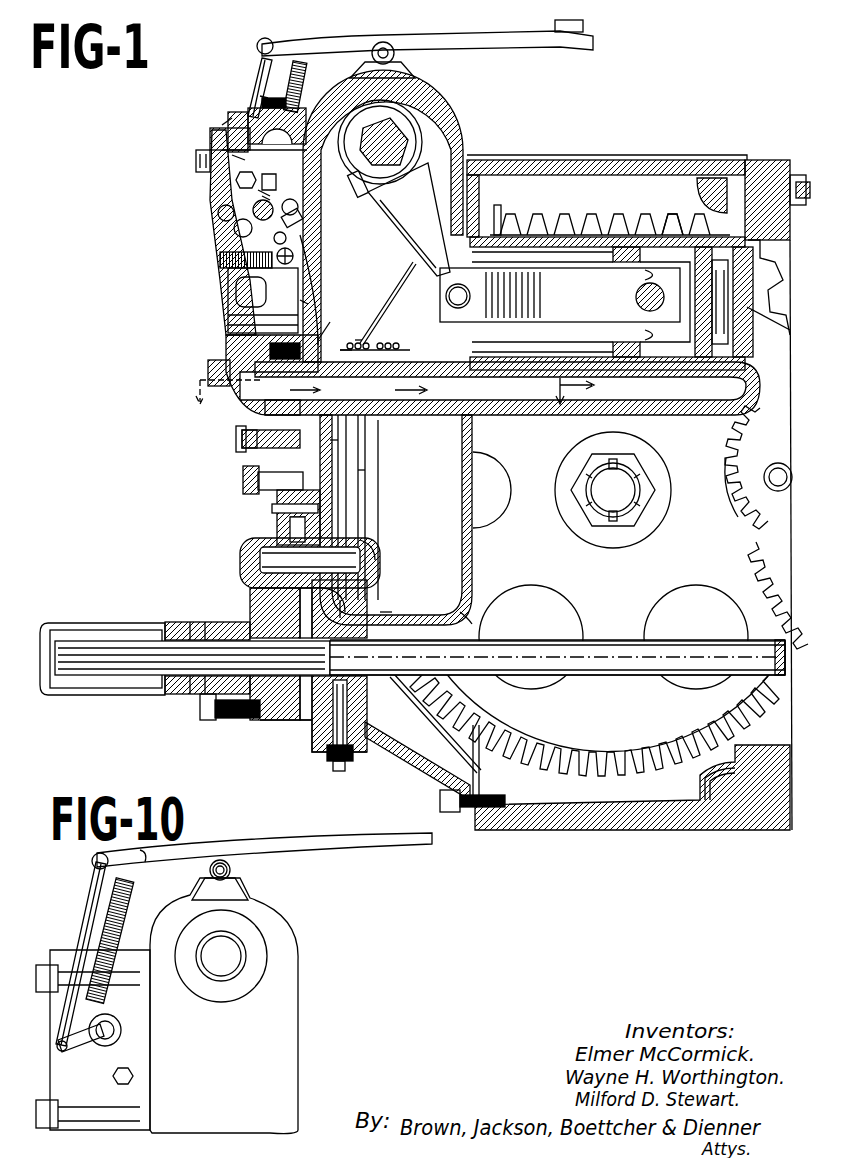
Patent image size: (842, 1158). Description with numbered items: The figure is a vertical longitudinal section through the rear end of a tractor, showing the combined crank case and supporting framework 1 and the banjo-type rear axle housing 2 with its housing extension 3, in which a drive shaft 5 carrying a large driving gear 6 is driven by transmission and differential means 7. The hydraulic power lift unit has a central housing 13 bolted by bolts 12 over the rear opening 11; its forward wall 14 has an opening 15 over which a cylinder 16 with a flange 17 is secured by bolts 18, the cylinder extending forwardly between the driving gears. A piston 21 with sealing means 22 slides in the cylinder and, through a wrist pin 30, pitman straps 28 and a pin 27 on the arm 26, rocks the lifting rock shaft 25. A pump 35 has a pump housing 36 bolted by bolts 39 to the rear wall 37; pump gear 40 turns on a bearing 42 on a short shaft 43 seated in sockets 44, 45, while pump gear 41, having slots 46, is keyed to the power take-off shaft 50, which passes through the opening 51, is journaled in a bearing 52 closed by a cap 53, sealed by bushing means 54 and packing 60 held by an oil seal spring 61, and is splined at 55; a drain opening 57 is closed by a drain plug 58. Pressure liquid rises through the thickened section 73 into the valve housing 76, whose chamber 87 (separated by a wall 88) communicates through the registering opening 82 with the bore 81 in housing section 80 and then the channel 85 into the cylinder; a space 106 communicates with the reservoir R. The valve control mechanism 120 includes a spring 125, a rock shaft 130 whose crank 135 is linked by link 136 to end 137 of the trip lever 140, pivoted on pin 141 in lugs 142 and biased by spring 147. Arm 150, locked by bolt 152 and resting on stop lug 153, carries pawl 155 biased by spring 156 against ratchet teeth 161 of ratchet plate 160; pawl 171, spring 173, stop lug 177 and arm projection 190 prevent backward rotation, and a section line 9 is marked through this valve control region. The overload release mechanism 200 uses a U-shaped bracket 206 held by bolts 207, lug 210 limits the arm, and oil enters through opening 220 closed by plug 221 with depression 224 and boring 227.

In FIG. 1, the combined crank case and supporting framework 1 is at (773, 815).
In FIG. 1, the rear axle housing 2 is at (650, 827).
In FIG. 1, the housing extension 3 is at (377, 413).
In FIG. 1, the drive shaft 5 is at (625, 483).
In FIG. 1, the driving gear 6 is at (610, 760).
In FIG. 1, the transmission mechanism and differential means 7 is at (727, 543).
In FIG. 1, the section line 9 is at (322, 333).
In FIG. 1, the rear opening 11 is at (512, 830).
In FIG. 1, the bolts 12 is at (440, 798).
In FIG. 1, the central housing 13 is at (453, 127).
In FIG. 10, the central housing 13 is at (290, 963).
In FIG. 1, the forward wall 14 is at (464, 580).
In FIG. 1, the opening 15 is at (452, 329).
In FIG. 1, the cylinder 16 is at (563, 226).
In FIG. 1, the flange 17 is at (478, 452).
In FIG. 1, the bolts 18 is at (505, 222).
In FIG. 1, the piston 21 is at (660, 232).
In FIG. 1, the sealing means 22 is at (700, 213).
In FIG. 1, the lifting rock shaft 25 is at (443, 104).
In FIG. 1, the arm 26 is at (420, 240).
In FIG. 1, the pin 27 is at (442, 296).
In FIG. 1, the pitman straps 28 is at (549, 288).
In FIG. 1, the wrist pin 30 is at (636, 297).
In FIG. 1, the pump 35 is at (254, 516).
In FIG. 1, the pump housing 36 is at (290, 530).
In FIG. 1, the rear wall 37 is at (333, 449).
In FIG. 1, the bolts 39 is at (246, 486).
In FIG. 1, the pump gear 40 is at (300, 509).
In FIG. 1, the pump gear 41 is at (330, 612).
In FIG. 1, the bearing 42 is at (300, 528).
In FIG. 1, the pin or short shaft 43 is at (362, 545).
In FIG. 1, the socket 44 is at (245, 570).
In FIG. 1, the socket 45 is at (362, 562).
In FIG. 1, the slots 46 is at (368, 650).
In FIG. 1, the power take-off shaft 50 is at (608, 640).
In FIG. 1, the opening 51 is at (308, 742).
In FIG. 1, the bearing 52 is at (250, 618).
In FIG. 1, the cap 53 is at (214, 722).
In FIG. 1, the bushing means 54 is at (166, 636).
In FIG. 1, the splined end 55 is at (86, 640).
In FIG. 1, the drain opening 57 is at (350, 727).
In FIG. 1, the drain plug 58 is at (343, 772).
In FIG. 1, the packing 60 is at (385, 612).
In FIG. 1, the oil seal spring 61 is at (342, 618).
In FIG. 1, the thickened section 73 is at (366, 472).
In FIG. 1, the valve housing 76 is at (216, 236).
In FIG. 10, the valve housing 76 is at (55, 1018).
In FIG. 1, the housing section 80 is at (412, 410).
In FIG. 1, the channel or bore 81 is at (449, 372).
In FIG. 1, the registering opening 82 is at (343, 507).
In FIG. 1, the channel 85 is at (640, 412).
In FIG. 1, the chamber 87 is at (242, 436).
In FIG. 1, the wall 88 is at (245, 445).
In FIG. 1, the space 106 is at (302, 300).
In FIG. 1, the valve control mechanism 120 is at (216, 210).
In FIG. 1, the spring 125 is at (210, 370).
In FIG. 1, the rock shaft 130 is at (298, 204).
In FIG. 10, the rock shaft 130 is at (122, 1031).
In FIG. 10, the crank 135 is at (70, 1060).
In FIG. 1, the link 136 is at (258, 70).
In FIG. 10, the link 136 is at (90, 916).
In FIG. 10, the end of trip lever 137 is at (145, 852).
In FIG. 1, the trip lever 140 is at (392, 44).
In FIG. 10, the trip lever 140 is at (245, 853).
In FIG. 10, the pivot pin 141 is at (232, 872).
In FIG. 1, the lugs 142 is at (408, 72).
In FIG. 10, the lugs 142 is at (240, 890).
In FIG. 1, the spring 147 is at (300, 80).
In FIG. 10, the spring 147 is at (125, 975).
In FIG. 1, the arm 150 is at (215, 183).
In FIG. 1, the bolt 152 is at (301, 216).
In FIG. 1, the stop lug 153 is at (196, 160).
In FIG. 1, the pawl 155 is at (268, 178).
In FIG. 1, the spring 156 is at (258, 167).
In FIG. 1, the ratchet plate 160 is at (252, 214).
In FIG. 1, the ratchet teeth 161 is at (237, 240).
In FIG. 1, the pawl 171 is at (287, 239).
In FIG. 1, the spring 173 is at (294, 255).
In FIG. 1, the stop lug 177 is at (232, 155).
In FIG. 1, the arm projection 190 is at (306, 285).
In FIG. 1, the overload release mechanism 200 is at (364, 333).
In FIG. 1, the U-shaped bracket 206 is at (387, 356).
In FIG. 1, the bolts 207 is at (346, 349).
In FIG. 1, the lug 210 is at (240, 318).
In FIG. 1, the opening 220 is at (280, 110).
In FIG. 1, the plug 221 is at (262, 118).
In FIG. 1, the depression 224 is at (270, 176).
In FIG. 1, the small boring 227 is at (262, 100).
In FIG. 1, the reservoir R is at (470, 618).